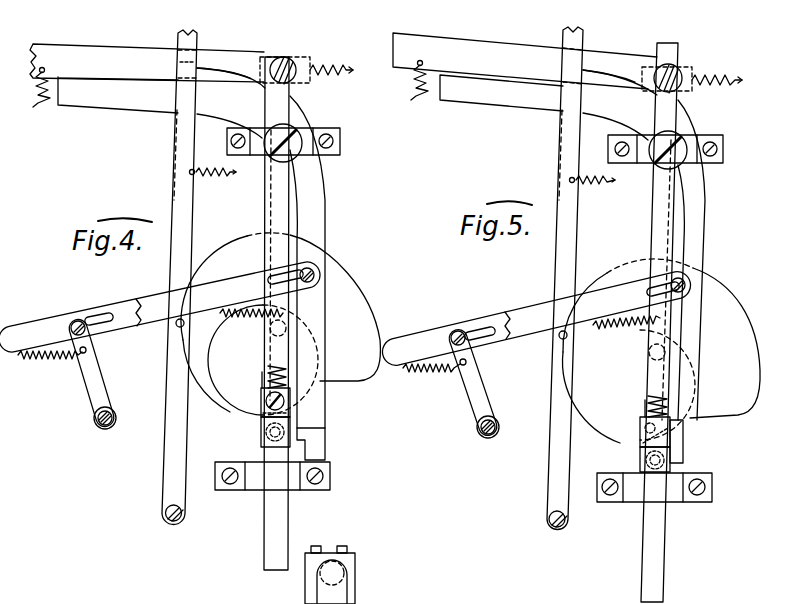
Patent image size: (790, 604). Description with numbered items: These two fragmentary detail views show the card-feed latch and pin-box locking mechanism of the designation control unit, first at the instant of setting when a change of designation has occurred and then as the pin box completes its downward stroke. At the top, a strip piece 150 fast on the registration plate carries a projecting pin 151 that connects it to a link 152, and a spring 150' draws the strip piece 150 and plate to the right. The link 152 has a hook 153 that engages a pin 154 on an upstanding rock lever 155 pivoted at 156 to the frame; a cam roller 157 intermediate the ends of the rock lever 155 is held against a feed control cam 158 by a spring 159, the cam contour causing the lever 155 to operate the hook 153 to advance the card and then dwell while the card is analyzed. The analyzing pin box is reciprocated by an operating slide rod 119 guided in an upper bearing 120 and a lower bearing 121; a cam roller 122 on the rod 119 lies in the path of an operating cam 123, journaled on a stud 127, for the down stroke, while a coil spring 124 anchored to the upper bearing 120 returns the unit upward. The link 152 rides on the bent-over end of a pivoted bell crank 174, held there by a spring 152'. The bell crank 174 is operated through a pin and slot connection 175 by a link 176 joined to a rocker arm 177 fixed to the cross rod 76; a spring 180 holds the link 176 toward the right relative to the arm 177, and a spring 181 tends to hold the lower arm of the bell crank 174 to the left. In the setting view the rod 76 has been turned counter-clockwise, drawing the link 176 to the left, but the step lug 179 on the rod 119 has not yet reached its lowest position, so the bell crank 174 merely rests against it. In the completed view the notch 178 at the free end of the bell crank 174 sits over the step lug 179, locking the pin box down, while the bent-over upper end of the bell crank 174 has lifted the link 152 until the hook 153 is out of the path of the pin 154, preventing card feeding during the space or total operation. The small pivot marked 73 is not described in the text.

In FIG. 4, the link 152 is at (147, 63).
In FIG. 5, the link 152 is at (525, 61).
In FIG. 4, the spring 152' is at (30, 100).
In FIG. 5, the spring 152' is at (411, 93).
In FIG. 4, the hook 153 is at (182, 76).
In FIG. 5, the hook 153 is at (570, 77).
In FIG. 4, the pivot 73 is at (187, 69).
In FIG. 4, the pin 154 is at (200, 67).
In FIG. 5, the pin 154 is at (585, 67).
In FIG. 4, the rock lever 155 is at (178, 162).
In FIG. 5, the rock lever 155 is at (560, 272).
In FIG. 4, the pivot 156 is at (165, 518).
In FIG. 5, the pivot 156 is at (567, 528).
In FIG. 4, the bell crank 174 is at (123, 100).
In FIG. 5, the bell crank 174 is at (687, 225).
In FIG. 4, the operating slide rod 119 is at (274, 528).
In FIG. 5, the operating slide rod 119 is at (657, 562).
In FIG. 4, the projecting pin 151 is at (285, 62).
In FIG. 5, the projecting pin 151 is at (683, 67).
In FIG. 4, the strip piece 150 is at (307, 55).
In FIG. 5, the strip piece 150 is at (699, 69).
In FIG. 4, the spring 150' is at (338, 83).
In FIG. 5, the spring 150' is at (725, 93).
In FIG. 4, the upper bearing 120 is at (307, 136).
In FIG. 5, the upper bearing 120 is at (697, 143).
In FIG. 4, the spring 159 is at (219, 176).
In FIG. 5, the spring 159 is at (598, 183).
In FIG. 4, the feed control cam 158 is at (355, 292).
In FIG. 5, the feed control cam 158 is at (662, 351).
In FIG. 4, the link 176 is at (235, 287).
In FIG. 5, the link 176 is at (604, 290).
In FIG. 4, the pin and slot connection 175 is at (323, 268).
In FIG. 5, the pin and slot connection 175 is at (692, 282).
In FIG. 4, the cam roller 157 is at (176, 326).
In FIG. 5, the cam roller 157 is at (560, 338).
In FIG. 4, the rocker arm 177 is at (98, 382).
In FIG. 5, the rocker arm 177 is at (479, 388).
In FIG. 4, the cross rod 76 is at (101, 428).
In FIG. 5, the cross rod 76 is at (485, 436).
In FIG. 4, the spring 180 is at (45, 363).
In FIG. 5, the spring 180 is at (452, 372).
In FIG. 4, the spring 181 is at (250, 317).
In FIG. 5, the spring 181 is at (640, 327).
In FIG. 4, the stud 127 is at (286, 328).
In FIG. 5, the stud 127 is at (667, 352).
In FIG. 4, the operating cam 123 is at (254, 373).
In FIG. 5, the operating cam 123 is at (633, 398).
In FIG. 4, the coil spring 124 is at (262, 372).
In FIG. 5, the coil spring 124 is at (653, 410).
In FIG. 4, the step lug 179 is at (260, 417).
In FIG. 5, the step lug 179 is at (640, 448).
In FIG. 4, the cam roller 122 is at (261, 440).
In FIG. 5, the cam roller 122 is at (673, 463).
In FIG. 4, the notch 178 is at (318, 441).
In FIG. 5, the notch 178 is at (683, 438).
In FIG. 4, the lower bearing 121 is at (293, 482).
In FIG. 5, the lower bearing 121 is at (675, 493).